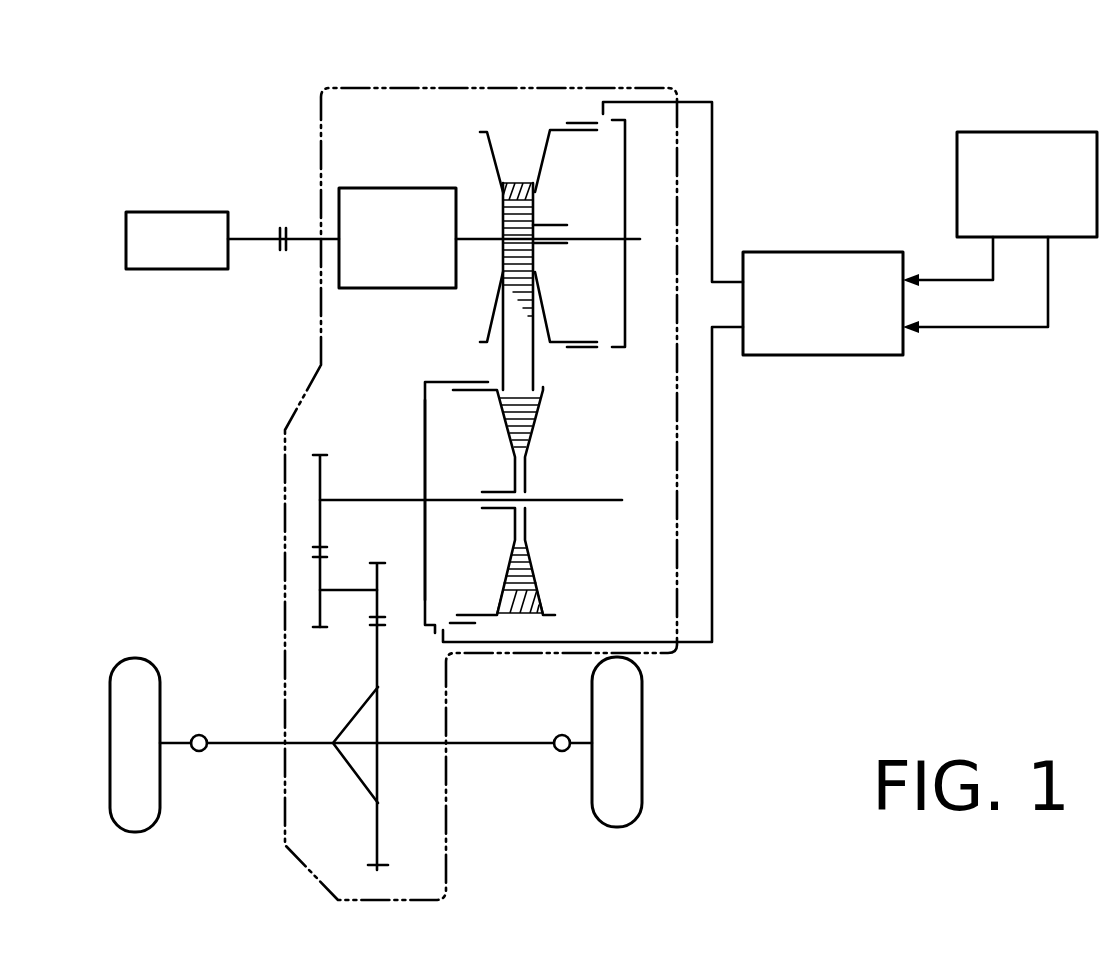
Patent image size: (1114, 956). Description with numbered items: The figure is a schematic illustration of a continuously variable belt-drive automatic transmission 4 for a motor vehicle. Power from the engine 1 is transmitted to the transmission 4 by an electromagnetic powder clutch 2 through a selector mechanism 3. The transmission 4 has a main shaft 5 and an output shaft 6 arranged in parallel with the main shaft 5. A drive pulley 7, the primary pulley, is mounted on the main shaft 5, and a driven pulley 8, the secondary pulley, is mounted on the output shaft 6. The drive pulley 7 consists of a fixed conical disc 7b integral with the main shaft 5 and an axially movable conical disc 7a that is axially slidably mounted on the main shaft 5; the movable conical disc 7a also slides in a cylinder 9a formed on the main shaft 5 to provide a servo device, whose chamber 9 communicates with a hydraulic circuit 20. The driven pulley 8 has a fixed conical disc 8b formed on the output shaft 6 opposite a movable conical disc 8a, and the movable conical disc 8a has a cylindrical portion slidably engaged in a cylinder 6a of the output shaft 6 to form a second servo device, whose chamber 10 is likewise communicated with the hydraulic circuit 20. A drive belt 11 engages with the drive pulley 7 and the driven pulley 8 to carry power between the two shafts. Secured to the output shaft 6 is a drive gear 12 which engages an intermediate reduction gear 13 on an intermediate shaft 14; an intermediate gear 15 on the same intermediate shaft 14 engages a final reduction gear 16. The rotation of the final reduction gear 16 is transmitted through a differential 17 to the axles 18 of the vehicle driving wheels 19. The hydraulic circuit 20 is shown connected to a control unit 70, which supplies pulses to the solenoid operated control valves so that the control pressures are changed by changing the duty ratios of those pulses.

The engine 1 is at (186, 211).
The electromagnetic powder clutch 2 is at (283, 226).
The selector mechanism 3 is at (400, 188).
The continuously variable belt-drive automatic transmission 4 is at (527, 128).
The main shaft 5 is at (468, 241).
The output shaft 6 is at (372, 498).
The cylinder of the output shaft 6a is at (440, 380).
The drive pulley 7 is at (456, 128).
The axially movable conical disc 7a is at (560, 130).
The fixed conical disc 7b is at (496, 168).
The driven pulley 8 is at (560, 577).
The movable conical disc 8a is at (500, 397).
The fixed conical disc 8b is at (535, 425).
The chamber 9 is at (604, 186).
The cylinder 9a is at (604, 350).
The chamber 10 is at (425, 425).
The drive belt 11 is at (524, 607).
The drive gear 12 is at (322, 453).
The intermediate reduction gear 13 is at (322, 632).
The intermediate shaft 14 is at (348, 590).
The intermediate gear 15 is at (378, 563).
The final reduction gear 16 is at (378, 868).
The differential 17 is at (362, 725).
The axles 18 is at (183, 745).
The vehicle driving wheels 19 is at (150, 694).
The hydraulic circuit 20 is at (815, 356).
The control unit 70 is at (995, 132).